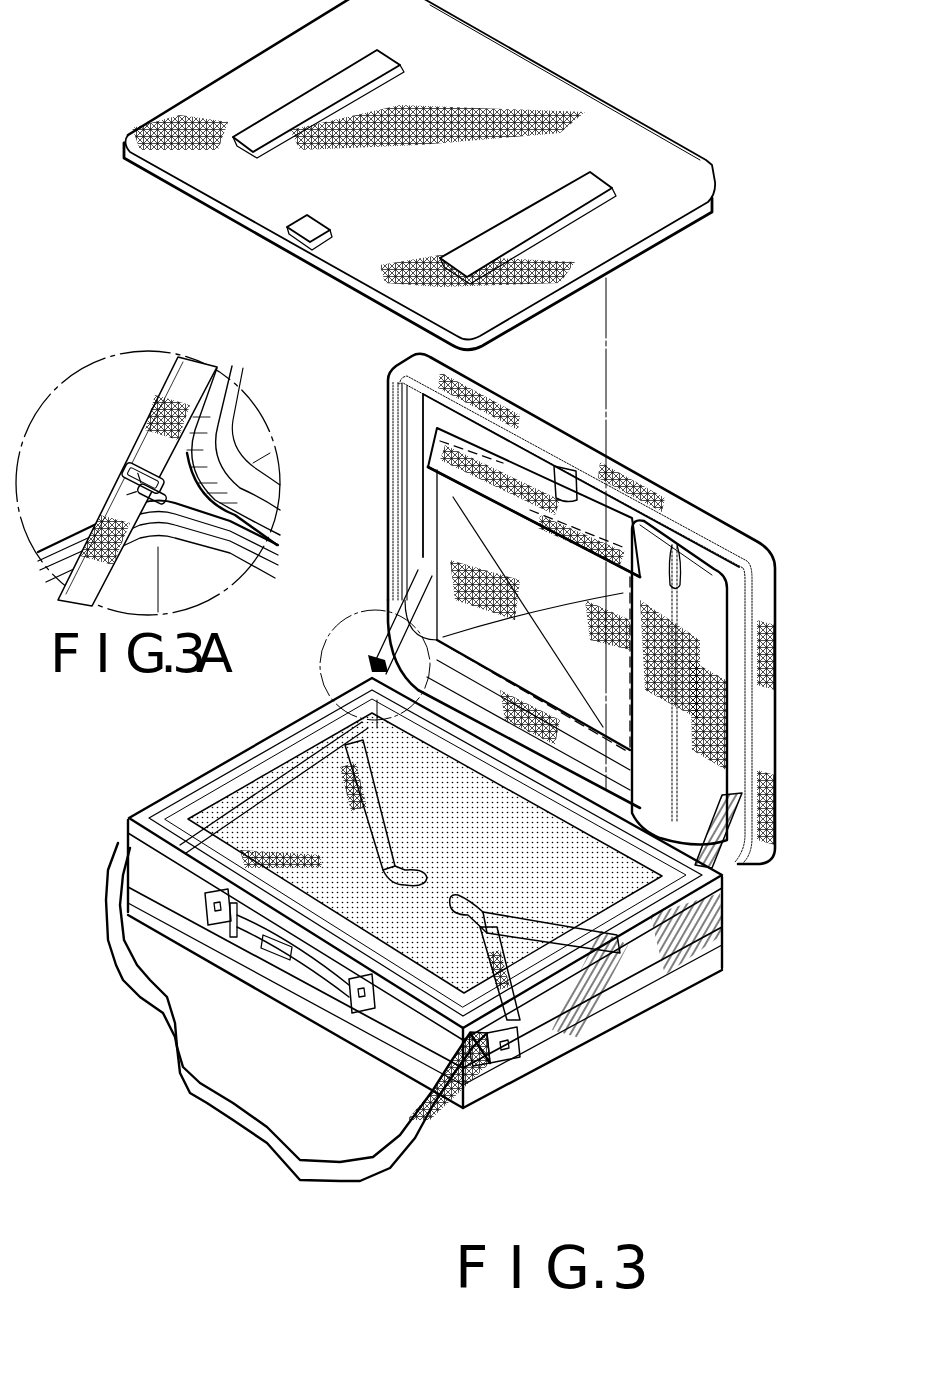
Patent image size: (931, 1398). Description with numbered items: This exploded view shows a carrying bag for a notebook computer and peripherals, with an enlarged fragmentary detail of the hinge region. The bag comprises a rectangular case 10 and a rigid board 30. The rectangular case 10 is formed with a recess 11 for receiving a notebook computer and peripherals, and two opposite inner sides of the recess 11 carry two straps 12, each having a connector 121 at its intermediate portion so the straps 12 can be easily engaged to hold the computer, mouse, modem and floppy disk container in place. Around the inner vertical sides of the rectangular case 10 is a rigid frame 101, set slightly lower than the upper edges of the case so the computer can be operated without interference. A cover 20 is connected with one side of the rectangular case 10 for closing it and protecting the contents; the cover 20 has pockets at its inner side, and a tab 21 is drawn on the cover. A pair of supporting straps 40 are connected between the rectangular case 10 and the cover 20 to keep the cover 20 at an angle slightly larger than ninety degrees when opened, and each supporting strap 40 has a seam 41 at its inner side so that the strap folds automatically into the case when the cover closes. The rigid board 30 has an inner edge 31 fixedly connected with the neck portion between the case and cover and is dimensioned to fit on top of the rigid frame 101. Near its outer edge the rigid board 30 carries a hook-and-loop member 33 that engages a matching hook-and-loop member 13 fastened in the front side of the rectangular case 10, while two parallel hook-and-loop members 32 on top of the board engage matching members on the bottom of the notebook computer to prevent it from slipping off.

In FIG. 3, the rectangular case 10 is at (710, 927).
In FIG. 3, the rigid frame 101 is at (178, 795).
In FIG. 3, the recess 11 is at (275, 820).
In FIG. 3, the strap 12 is at (578, 1000).
In FIG. 3, the connector 121 is at (478, 918).
In FIG. 3, the hook-and-loop member 13 is at (290, 950).
In FIG. 3, the cover 20 is at (763, 710).
In FIG. 3, the mesh pocket tab 21 is at (553, 466).
In FIG. 3, the rigid board 30 is at (650, 217).
In FIG. 3, the inner edge 31 is at (563, 80).
In FIG. 3, the hook-and-loop member 32 is at (307, 110).
In FIG. 3, the hook-and-loop member 33 is at (307, 230).
In FIG. 3A, the supporting strap 40 is at (150, 460).
In FIG. 3A, the seam 41 is at (140, 497).